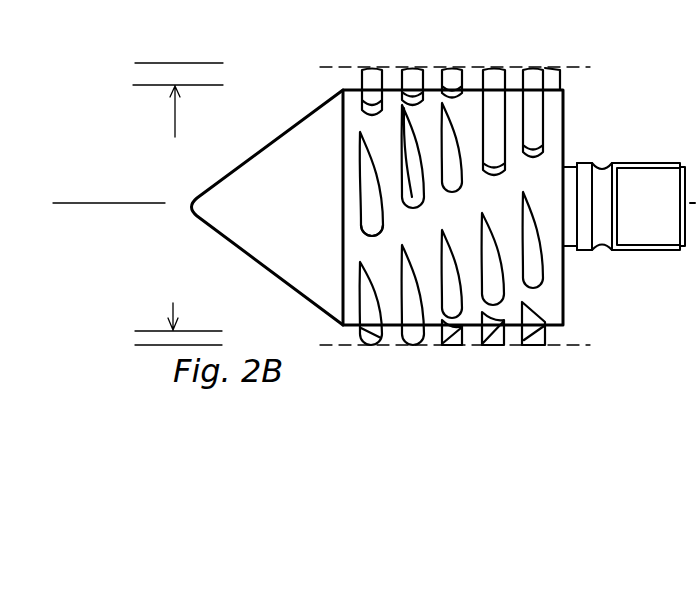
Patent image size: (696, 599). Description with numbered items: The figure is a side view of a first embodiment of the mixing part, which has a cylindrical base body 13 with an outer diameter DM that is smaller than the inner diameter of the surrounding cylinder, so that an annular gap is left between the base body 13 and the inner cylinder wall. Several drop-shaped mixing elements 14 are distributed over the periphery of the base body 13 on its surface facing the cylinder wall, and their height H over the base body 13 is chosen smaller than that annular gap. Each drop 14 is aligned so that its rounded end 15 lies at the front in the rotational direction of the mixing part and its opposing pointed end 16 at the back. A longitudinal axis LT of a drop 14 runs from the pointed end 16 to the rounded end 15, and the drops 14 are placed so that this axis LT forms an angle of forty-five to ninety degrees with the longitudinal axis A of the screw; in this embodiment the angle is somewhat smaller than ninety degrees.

The cylindrical base body 13 is at (556, 104).
The drop-shaped mixing element 14 is at (537, 270).
The rounded end 15 is at (375, 238).
The pointed end 16 is at (360, 133).
The height H is at (143, 72).
The longitudinal axis of the screw A is at (80, 200).
The outer diameter of the base body DM is at (169, 275).
The longitudinal axis of the drop LT is at (416, 208).